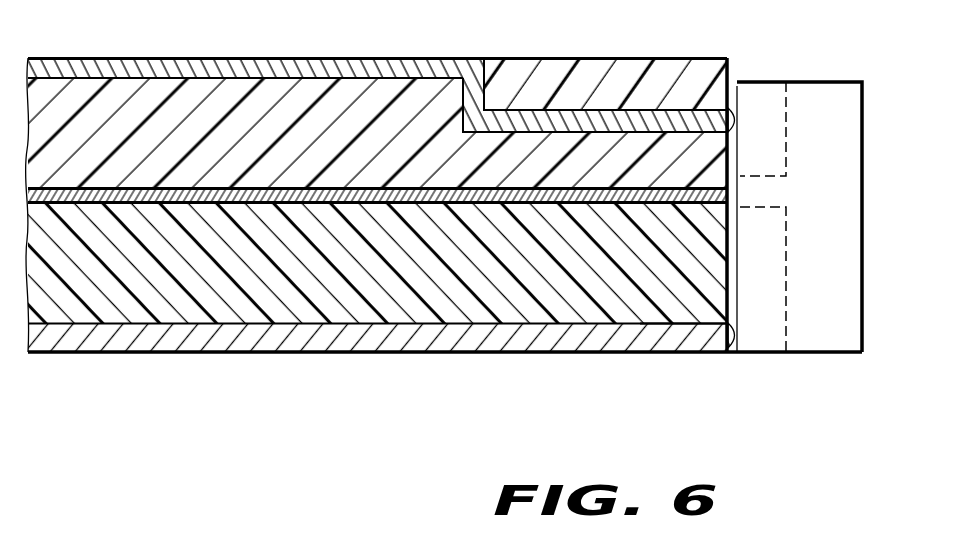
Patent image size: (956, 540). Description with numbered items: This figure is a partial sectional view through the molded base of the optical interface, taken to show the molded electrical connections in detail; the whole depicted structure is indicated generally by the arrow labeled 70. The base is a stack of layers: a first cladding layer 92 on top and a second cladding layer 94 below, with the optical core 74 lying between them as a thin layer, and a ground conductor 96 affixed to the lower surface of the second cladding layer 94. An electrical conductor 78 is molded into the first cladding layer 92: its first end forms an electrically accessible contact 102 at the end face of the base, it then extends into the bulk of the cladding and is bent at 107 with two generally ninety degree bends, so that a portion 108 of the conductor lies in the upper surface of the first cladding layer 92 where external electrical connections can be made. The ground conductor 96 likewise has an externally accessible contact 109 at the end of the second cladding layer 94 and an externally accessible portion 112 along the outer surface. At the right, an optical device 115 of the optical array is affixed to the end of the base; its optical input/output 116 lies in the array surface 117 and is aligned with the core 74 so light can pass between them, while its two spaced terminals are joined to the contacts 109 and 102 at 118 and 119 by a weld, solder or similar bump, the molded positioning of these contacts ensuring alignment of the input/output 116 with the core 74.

The laminated structure 70 is at (412, 438).
The optical core 74 is at (67, 187).
The electrical conductor 78 is at (237, 57).
The first cladding layer 92 is at (166, 120).
The second cladding layer 94 is at (150, 293).
The ground conductor 96 is at (327, 345).
The electrically accessible contact 102 is at (712, 100).
The bend 107 is at (470, 93).
The portion of electrical conductor 108 is at (336, 57).
The externally accessible electrical contact 109 is at (717, 337).
The externally accessible electrical portion 112 is at (484, 354).
The optical device 115 is at (827, 86).
The optical input/output 116 is at (738, 190).
The surface of optical array 117 is at (738, 278).
The connection 118 is at (733, 352).
The connection 119 is at (731, 105).